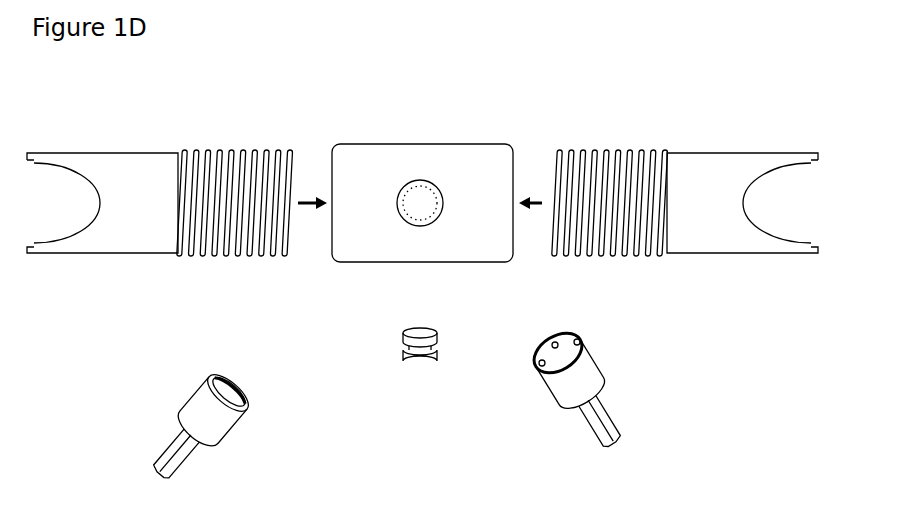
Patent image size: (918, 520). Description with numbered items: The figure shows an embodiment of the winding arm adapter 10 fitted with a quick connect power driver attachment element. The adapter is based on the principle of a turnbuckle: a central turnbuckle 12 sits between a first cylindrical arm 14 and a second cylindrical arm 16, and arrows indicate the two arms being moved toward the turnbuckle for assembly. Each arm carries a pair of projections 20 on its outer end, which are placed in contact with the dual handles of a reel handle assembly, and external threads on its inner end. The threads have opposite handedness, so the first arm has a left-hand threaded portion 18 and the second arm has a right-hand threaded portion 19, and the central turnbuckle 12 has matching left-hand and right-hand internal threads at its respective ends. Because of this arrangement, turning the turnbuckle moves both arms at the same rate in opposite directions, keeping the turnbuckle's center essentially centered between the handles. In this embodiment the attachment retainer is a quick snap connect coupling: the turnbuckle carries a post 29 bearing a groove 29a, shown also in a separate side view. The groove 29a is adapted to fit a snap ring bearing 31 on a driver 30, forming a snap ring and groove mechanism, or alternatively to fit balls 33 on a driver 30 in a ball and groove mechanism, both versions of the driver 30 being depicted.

The winding arm adapter 10 is at (421, 118).
The central turnbuckle 12 is at (455, 246).
The first cylindrical arm 14 is at (664, 134).
The second cylindrical arm 16 is at (186, 134).
The left-hand threaded portion 18 is at (248, 255).
The right-hand threaded portion 19 is at (648, 255).
The pair of projections 20 is at (67, 203).
The post 29 is at (420, 203).
The groove 29a is at (440, 345).
The driver 30 is at (190, 393).
The snap ring bearing 31 is at (243, 412).
The balls 33 is at (579, 340).